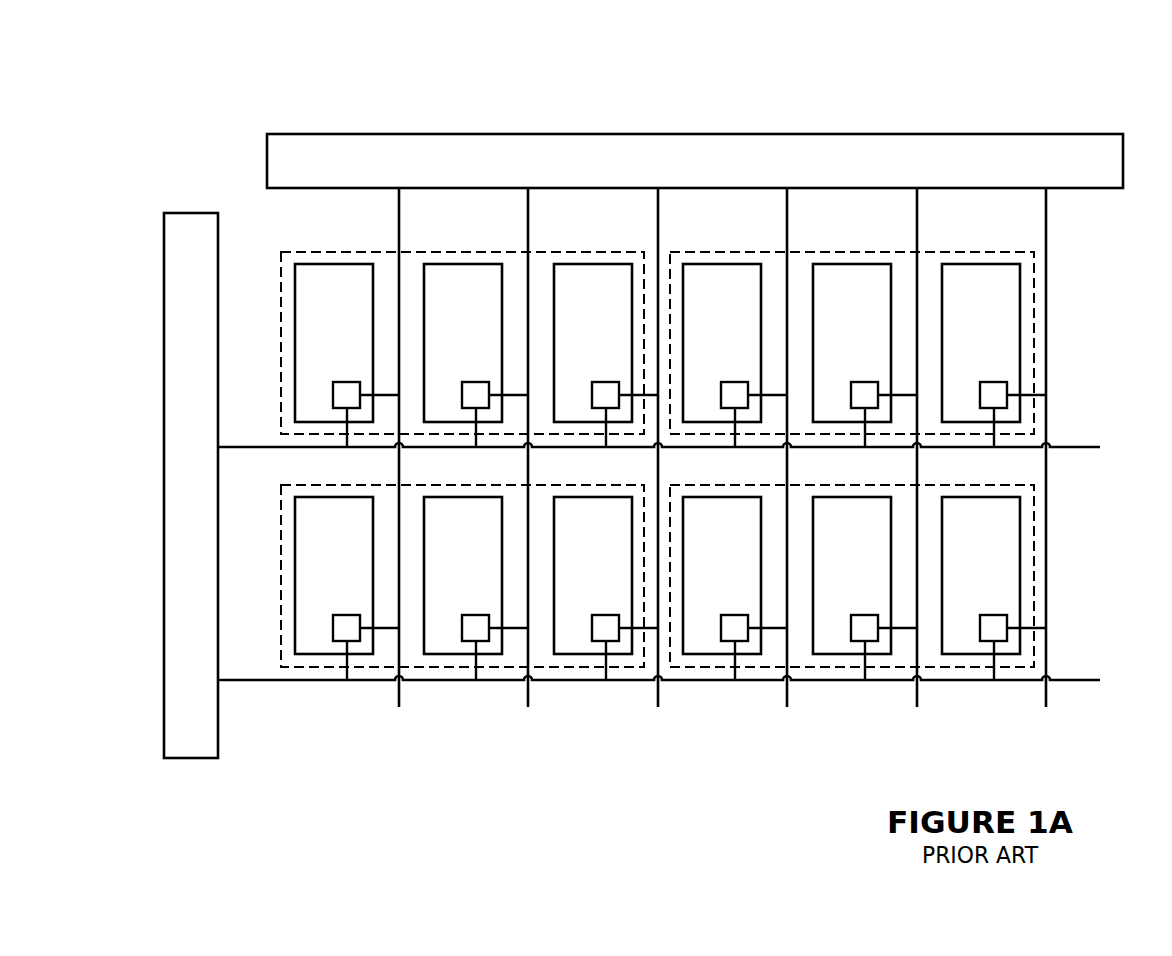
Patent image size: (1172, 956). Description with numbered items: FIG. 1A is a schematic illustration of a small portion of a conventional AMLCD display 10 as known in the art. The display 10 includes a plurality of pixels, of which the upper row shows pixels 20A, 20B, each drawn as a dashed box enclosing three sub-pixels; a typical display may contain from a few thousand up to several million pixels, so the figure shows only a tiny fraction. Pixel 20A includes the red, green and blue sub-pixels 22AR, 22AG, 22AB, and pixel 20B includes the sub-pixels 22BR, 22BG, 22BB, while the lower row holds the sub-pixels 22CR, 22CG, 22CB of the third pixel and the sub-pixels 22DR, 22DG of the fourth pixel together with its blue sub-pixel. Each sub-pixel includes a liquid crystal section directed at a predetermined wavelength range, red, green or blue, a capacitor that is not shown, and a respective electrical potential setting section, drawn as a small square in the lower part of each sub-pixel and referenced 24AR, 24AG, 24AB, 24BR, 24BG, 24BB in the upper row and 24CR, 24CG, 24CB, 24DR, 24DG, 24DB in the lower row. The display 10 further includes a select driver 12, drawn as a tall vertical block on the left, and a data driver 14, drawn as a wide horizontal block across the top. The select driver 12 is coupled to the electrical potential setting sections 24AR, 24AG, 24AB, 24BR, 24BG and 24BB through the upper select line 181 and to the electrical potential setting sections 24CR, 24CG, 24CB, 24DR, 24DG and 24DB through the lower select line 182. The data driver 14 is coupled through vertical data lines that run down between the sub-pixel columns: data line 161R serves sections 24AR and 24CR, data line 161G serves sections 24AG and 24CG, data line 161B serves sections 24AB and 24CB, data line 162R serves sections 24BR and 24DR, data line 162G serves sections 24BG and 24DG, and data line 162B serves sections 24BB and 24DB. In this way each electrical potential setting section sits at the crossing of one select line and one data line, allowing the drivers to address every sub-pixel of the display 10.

The display 10 is at (158, 46).
The select driver 12 is at (195, 212).
The data driver 14 is at (411, 134).
The data line 161R is at (399, 223).
The data line 161G is at (528, 228).
The data line 161B is at (658, 229).
The data line 162R is at (787, 220).
The data line 162G is at (917, 227).
The data line 162B is at (1046, 228).
The select line 181 is at (1085, 446).
The select line 182 is at (1083, 679).
The pixel 20A is at (281, 388).
The pixel 20B is at (1034, 368).
The sub-pixel 22AR is at (307, 264).
The sub-pixel 22AG is at (439, 264).
The sub-pixel 22AB is at (567, 264).
The sub-pixel 22BR is at (705, 264).
The sub-pixel 22BG is at (837, 264).
The sub-pixel 22BB is at (954, 264).
The sub-pixel 22CR is at (295, 503).
The sub-pixel 22CG is at (464, 497).
The sub-pixel 22CB is at (594, 497).
The sub-pixel 22DR is at (723, 497).
The sub-pixel 22DG is at (853, 497).
The electrical potential setting section 24AR is at (334, 409).
The electrical potential setting section 24AG is at (463, 409).
The electrical potential setting section 24AB is at (593, 409).
The electrical potential setting section 24BR is at (722, 409).
The electrical potential setting section 24BG is at (852, 409).
The electrical potential setting section 24BB is at (981, 409).
The electrical potential setting section 24CR is at (334, 642).
The electrical potential setting section 24CG is at (463, 642).
The electrical potential setting section 24CB is at (593, 642).
The electrical potential setting section 24DR is at (722, 642).
The electrical potential setting section 24DG is at (852, 642).
The electrical potential setting section 24DB is at (981, 642).